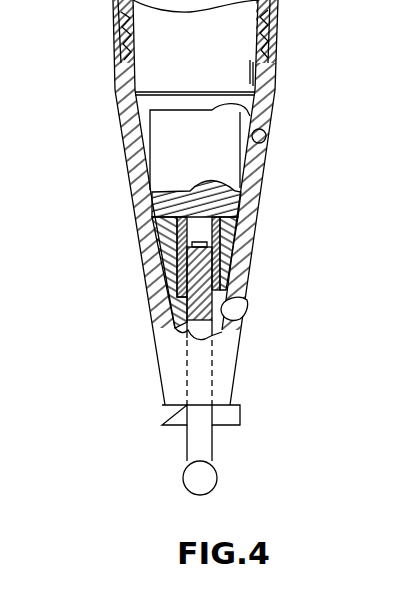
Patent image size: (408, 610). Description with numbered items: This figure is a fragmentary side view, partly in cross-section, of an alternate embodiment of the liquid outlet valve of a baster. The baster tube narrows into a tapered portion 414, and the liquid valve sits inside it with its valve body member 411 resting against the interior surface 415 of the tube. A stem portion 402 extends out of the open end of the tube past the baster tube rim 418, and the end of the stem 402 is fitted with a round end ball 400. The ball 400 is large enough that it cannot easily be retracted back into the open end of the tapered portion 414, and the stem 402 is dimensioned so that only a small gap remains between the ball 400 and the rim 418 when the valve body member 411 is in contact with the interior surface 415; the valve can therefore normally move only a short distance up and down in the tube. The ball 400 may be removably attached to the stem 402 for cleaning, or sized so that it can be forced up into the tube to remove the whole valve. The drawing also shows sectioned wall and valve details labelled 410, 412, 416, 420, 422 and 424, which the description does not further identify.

The round end ball 400 is at (204, 481).
The stem portion 402 is at (197, 418).
The housing upper portion 410 is at (113, 23).
The valve body member 411 is at (258, 144).
The thread 412 is at (116, 51).
The tapered portion 414 is at (127, 167).
The interior surface 415 is at (246, 316).
The thread 416 is at (268, 77).
The baster tube rim 418 is at (243, 422).
The cap 420 is at (153, 210).
The threaded insert 422 is at (222, 268).
The body 424 is at (154, 266).